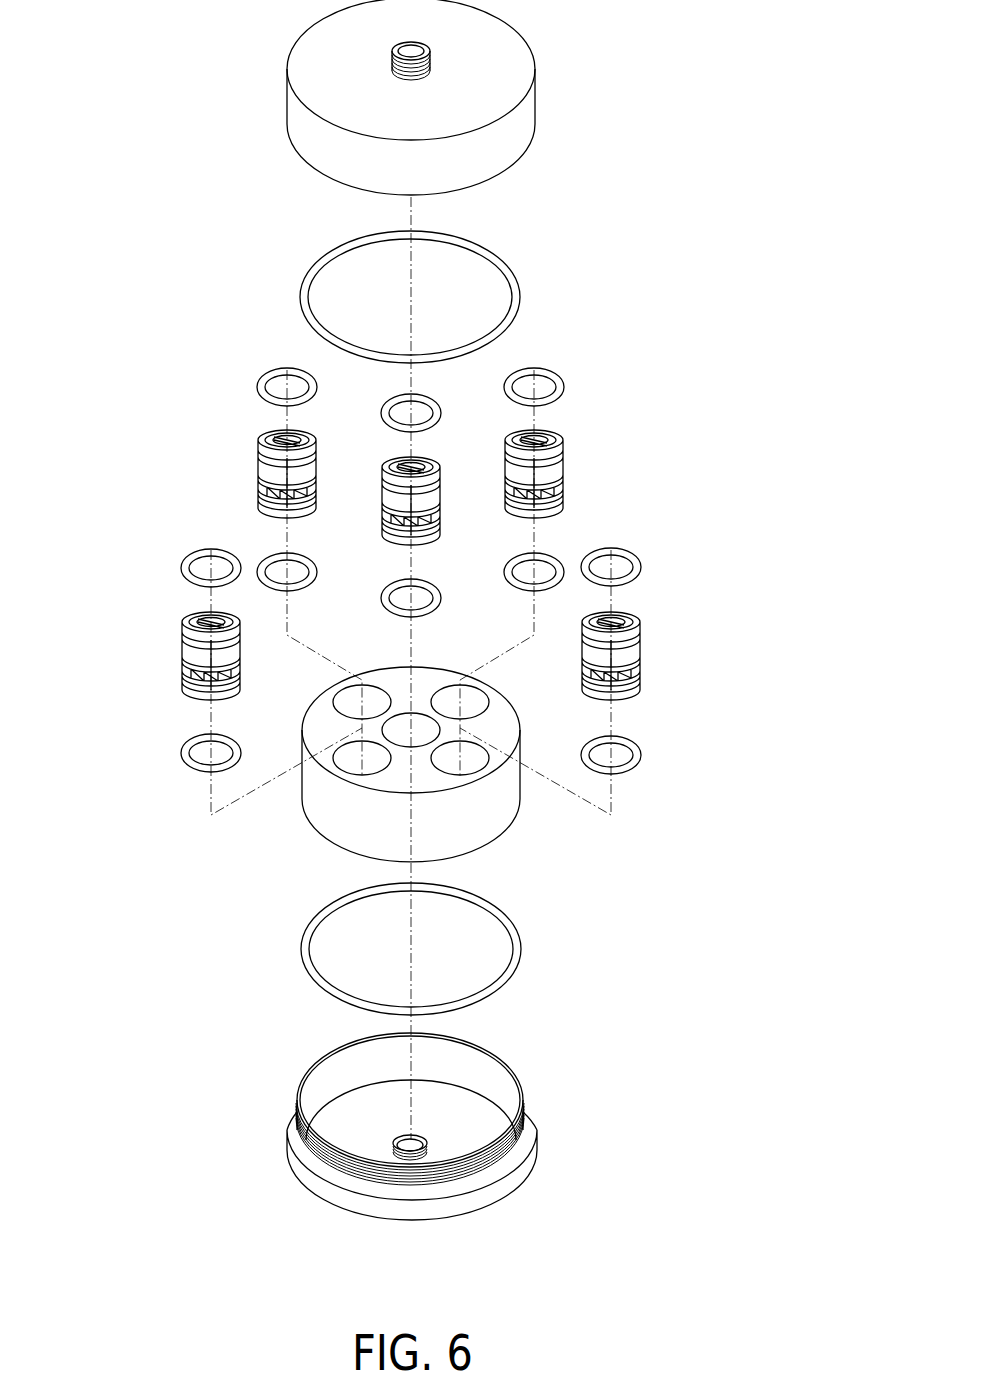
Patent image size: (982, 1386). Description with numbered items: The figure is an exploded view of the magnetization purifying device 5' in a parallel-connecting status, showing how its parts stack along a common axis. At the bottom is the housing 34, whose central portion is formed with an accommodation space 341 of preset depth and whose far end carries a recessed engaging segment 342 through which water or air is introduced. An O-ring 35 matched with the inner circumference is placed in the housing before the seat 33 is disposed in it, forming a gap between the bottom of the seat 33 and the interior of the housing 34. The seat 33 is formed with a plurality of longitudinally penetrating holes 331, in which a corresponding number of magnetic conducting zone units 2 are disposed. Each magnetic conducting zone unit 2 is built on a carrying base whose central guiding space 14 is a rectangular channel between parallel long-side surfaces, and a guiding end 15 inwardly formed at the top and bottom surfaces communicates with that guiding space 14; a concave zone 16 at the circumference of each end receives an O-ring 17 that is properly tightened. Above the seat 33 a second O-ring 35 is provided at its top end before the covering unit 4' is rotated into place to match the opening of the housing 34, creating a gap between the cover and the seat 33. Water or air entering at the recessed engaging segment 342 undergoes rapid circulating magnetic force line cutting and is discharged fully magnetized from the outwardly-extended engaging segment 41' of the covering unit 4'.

The covering unit 4' is at (366, 97).
The engaging segment 41' is at (503, 46).
The O-ring 35 is at (507, 270).
The magnetization purifying device 5' is at (726, 352).
The guiding end 15 is at (298, 442).
The guiding space 14 is at (200, 620).
The concave zone 16 is at (637, 625).
The O-ring 17 is at (633, 556).
The magnetic conducting zone unit 2 is at (673, 665).
The seat 33 is at (340, 823).
The holes 331 is at (470, 760).
The housing 34 is at (322, 1188).
The accommodation space 341 is at (362, 1102).
The recessed engaging segment 342 is at (430, 1140).